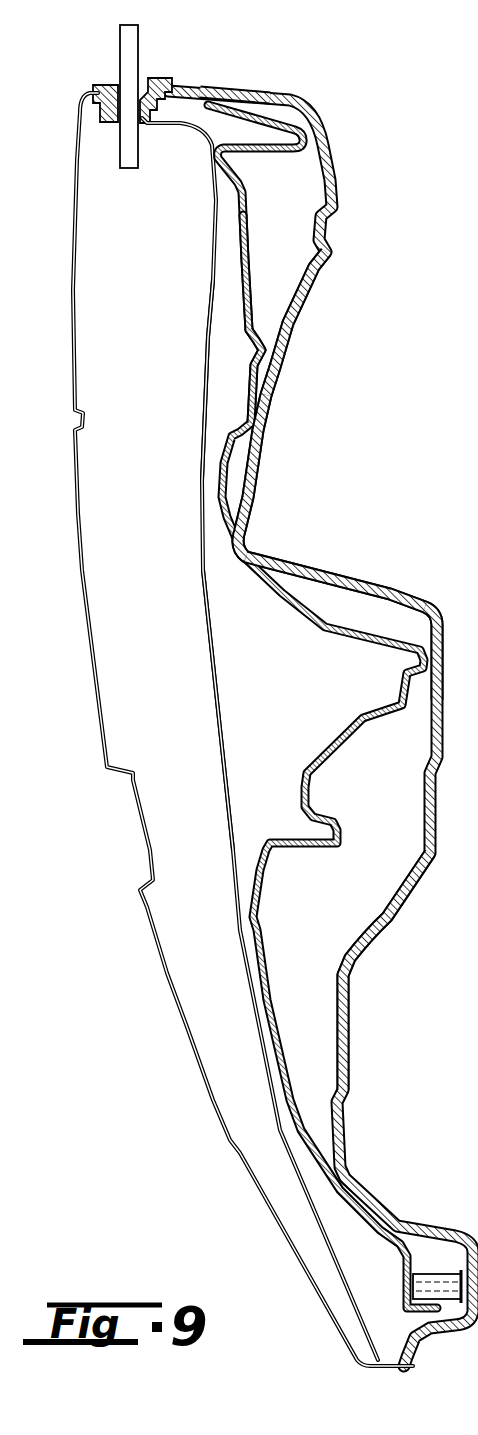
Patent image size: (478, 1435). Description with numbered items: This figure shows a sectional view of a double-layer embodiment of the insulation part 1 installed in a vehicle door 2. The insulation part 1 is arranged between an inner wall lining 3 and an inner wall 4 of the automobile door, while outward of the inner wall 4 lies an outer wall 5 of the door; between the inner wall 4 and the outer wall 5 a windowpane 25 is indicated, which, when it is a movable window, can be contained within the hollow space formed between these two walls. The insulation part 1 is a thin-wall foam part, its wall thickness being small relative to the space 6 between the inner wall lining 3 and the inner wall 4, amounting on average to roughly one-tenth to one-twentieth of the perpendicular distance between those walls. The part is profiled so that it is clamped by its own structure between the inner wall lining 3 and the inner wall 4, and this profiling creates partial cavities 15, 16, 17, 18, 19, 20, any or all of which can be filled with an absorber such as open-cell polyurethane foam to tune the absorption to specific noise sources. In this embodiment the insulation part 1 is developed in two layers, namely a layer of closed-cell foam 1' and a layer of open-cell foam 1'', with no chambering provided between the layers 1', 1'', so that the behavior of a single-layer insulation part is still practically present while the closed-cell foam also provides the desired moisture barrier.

The insulation part 1 is at (322, 704).
The layer of closed-cell foam 1' is at (208, 268).
The layer of open-cell foam 1'' is at (325, 319).
The vehicle door 2 is at (283, 77).
The inner wall lining 3 is at (336, 212).
The inner wall 4 is at (207, 336).
The outer wall 5 is at (72, 353).
The space 6 is at (250, 587).
The partial cavity 15 is at (288, 270).
The partial cavity 16 is at (233, 477).
The partial cavity 17 is at (245, 405).
The partial cavity 18 is at (350, 613).
The partial cavity 19 is at (358, 892).
The partial cavity 20 is at (307, 700).
The windowpane 25 is at (130, 62).